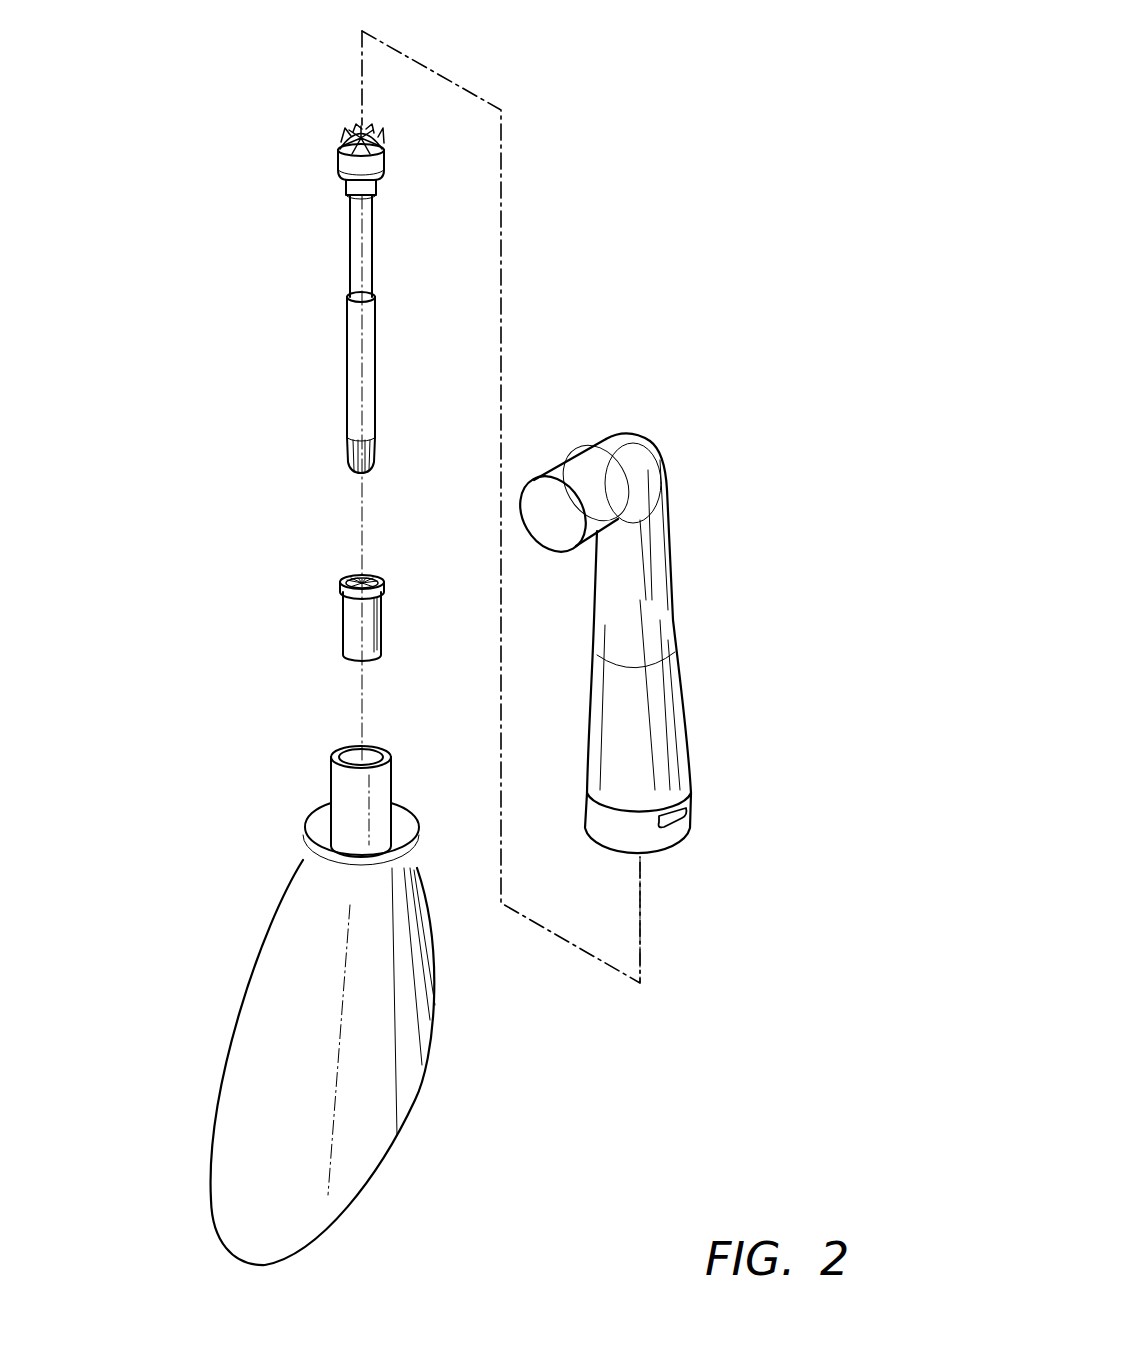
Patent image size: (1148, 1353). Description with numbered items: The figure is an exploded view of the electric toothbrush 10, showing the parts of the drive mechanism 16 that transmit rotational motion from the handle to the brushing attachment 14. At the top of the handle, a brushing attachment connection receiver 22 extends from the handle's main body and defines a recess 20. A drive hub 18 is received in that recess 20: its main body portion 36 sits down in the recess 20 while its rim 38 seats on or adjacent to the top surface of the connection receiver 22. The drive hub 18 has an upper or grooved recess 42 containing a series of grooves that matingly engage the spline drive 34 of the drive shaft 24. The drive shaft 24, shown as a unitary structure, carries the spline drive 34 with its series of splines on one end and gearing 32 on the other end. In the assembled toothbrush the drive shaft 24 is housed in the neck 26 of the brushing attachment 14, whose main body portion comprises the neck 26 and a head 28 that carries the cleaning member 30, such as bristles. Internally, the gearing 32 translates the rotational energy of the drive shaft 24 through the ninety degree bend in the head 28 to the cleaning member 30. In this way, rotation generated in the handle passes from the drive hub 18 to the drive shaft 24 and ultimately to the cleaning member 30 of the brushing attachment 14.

The electric toothbrush 10 is at (747, 250).
The brushing attachment 14 is at (650, 659).
The drive mechanism 16 is at (328, 296).
The drive hub 18 is at (338, 597).
The recess 20 is at (352, 752).
The brushing attachment connection receiver 22 is at (323, 981).
The drive shaft 24 is at (367, 296).
The neck 26 is at (668, 622).
The head 28 is at (626, 448).
The cleaning member 30 is at (560, 478).
The gearing 32 is at (341, 148).
The spline drive 34 is at (380, 453).
The main body portion 36 is at (379, 645).
The rim 38 is at (385, 594).
The upper recess 42 is at (354, 578).